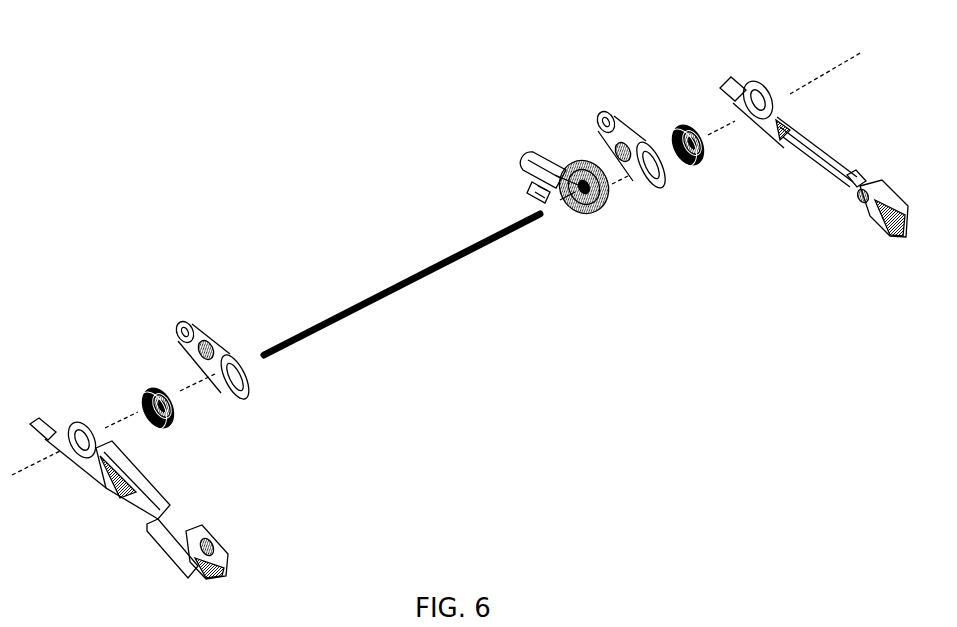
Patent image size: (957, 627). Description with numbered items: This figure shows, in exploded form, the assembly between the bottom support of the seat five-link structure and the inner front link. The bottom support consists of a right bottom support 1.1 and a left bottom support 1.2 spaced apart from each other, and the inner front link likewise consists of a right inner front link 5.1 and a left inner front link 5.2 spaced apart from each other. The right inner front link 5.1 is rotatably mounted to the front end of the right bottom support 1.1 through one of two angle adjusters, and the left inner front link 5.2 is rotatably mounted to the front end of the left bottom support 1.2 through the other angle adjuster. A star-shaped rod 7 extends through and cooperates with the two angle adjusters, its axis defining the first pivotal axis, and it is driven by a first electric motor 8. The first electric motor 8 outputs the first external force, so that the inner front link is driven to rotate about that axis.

The right bottom support 1.1 is at (796, 120).
The left bottom support 1.2 is at (210, 543).
The right inner front link 5.1 is at (611, 110).
The left inner front link 5.2 is at (191, 334).
The star-shaped rod 7 is at (381, 292).
The first electric motor 8 is at (543, 173).